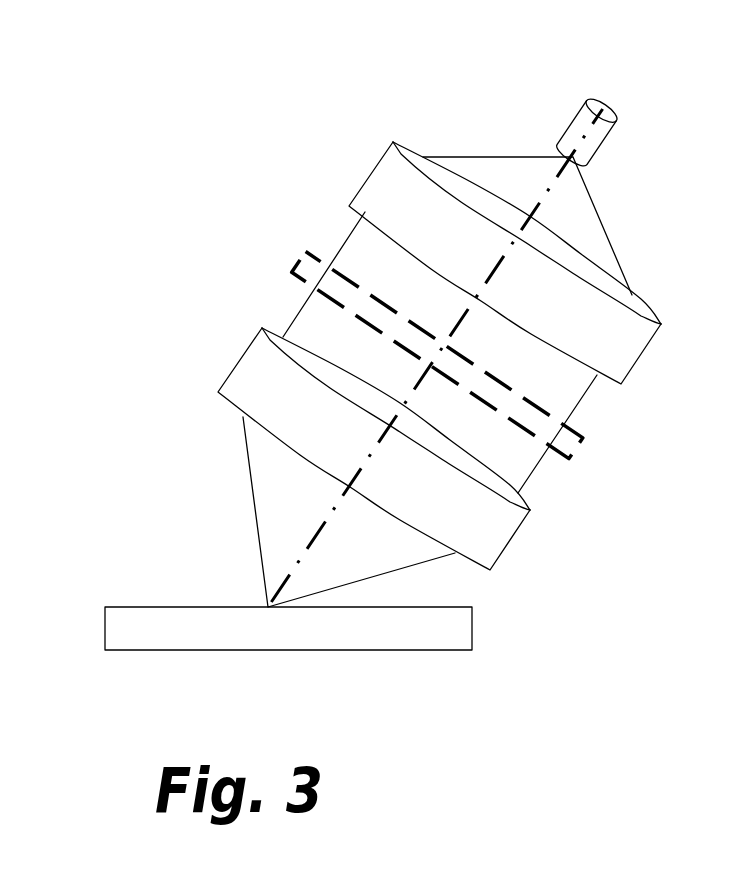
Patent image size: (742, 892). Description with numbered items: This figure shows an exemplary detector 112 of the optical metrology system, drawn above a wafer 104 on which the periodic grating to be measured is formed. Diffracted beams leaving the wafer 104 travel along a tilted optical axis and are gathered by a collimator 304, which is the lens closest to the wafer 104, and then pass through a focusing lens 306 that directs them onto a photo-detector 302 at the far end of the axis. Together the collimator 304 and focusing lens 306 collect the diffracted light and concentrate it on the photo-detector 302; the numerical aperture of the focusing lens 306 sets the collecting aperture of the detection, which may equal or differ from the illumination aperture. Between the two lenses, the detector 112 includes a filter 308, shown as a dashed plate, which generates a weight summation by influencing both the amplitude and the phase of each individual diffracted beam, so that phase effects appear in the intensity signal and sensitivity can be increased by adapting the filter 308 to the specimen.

The wafer 104 is at (296, 645).
The detector 112 is at (187, 155).
The photo-detector 302 is at (618, 117).
The collimator 304 is at (243, 357).
The focusing lens 306 is at (378, 158).
The filter 308 is at (290, 270).